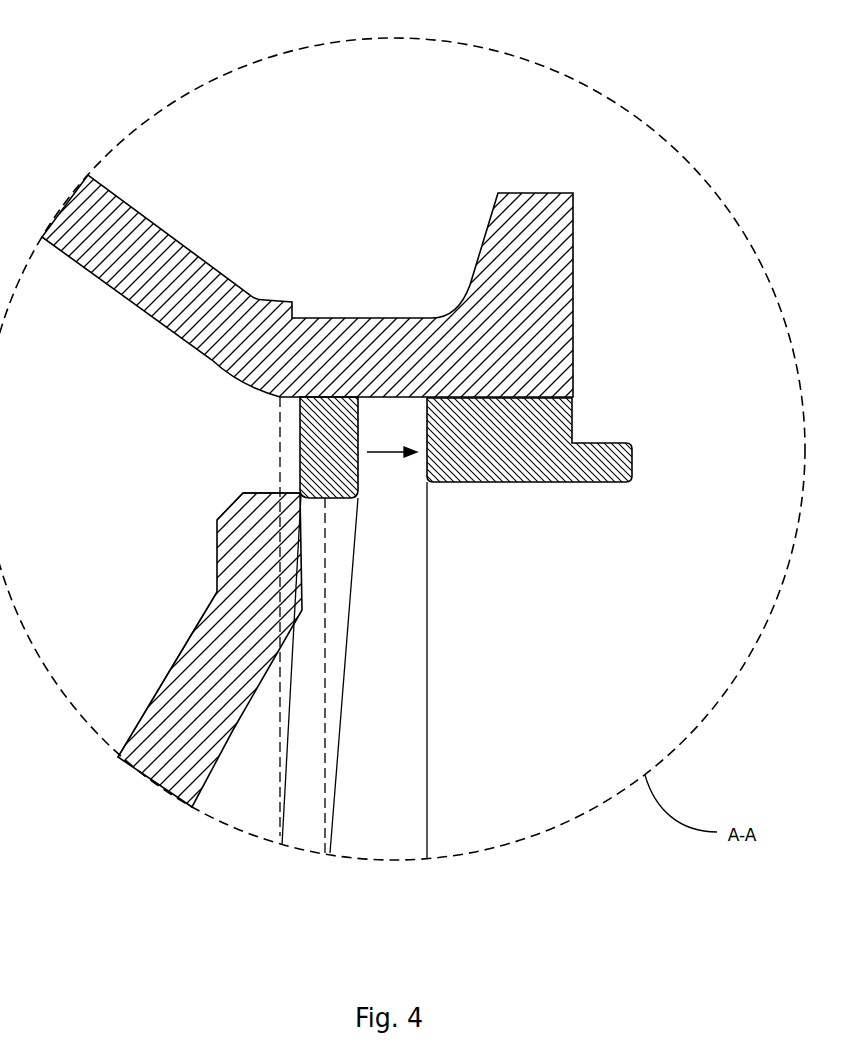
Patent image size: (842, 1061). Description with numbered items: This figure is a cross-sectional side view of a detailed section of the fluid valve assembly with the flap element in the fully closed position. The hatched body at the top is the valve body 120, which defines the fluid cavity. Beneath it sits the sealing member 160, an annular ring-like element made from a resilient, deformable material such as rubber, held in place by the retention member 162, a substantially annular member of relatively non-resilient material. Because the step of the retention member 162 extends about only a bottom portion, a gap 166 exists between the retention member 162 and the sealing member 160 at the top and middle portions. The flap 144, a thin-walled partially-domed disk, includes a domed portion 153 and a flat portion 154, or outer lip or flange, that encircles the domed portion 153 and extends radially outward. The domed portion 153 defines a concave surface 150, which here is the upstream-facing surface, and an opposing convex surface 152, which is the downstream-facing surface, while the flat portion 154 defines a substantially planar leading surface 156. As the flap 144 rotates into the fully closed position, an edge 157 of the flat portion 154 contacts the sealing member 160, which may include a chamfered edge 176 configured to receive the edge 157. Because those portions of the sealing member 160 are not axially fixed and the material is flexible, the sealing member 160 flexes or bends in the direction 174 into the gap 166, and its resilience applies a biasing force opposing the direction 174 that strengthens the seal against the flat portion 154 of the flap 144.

The valve body 120 is at (125, 191).
The direction 174 is at (385, 450).
The retention member 162 is at (535, 438).
The gap 166 is at (407, 475).
The chamfered edge 176 is at (303, 498).
The edge 157 is at (297, 498).
The flat portion 154 is at (227, 512).
The flap 144 is at (185, 618).
The convex surface 152 is at (148, 673).
The domed portion 153 is at (137, 725).
The leading surface 156 is at (295, 608).
The sealing member 160 is at (333, 710).
The concave surface 150 is at (233, 730).